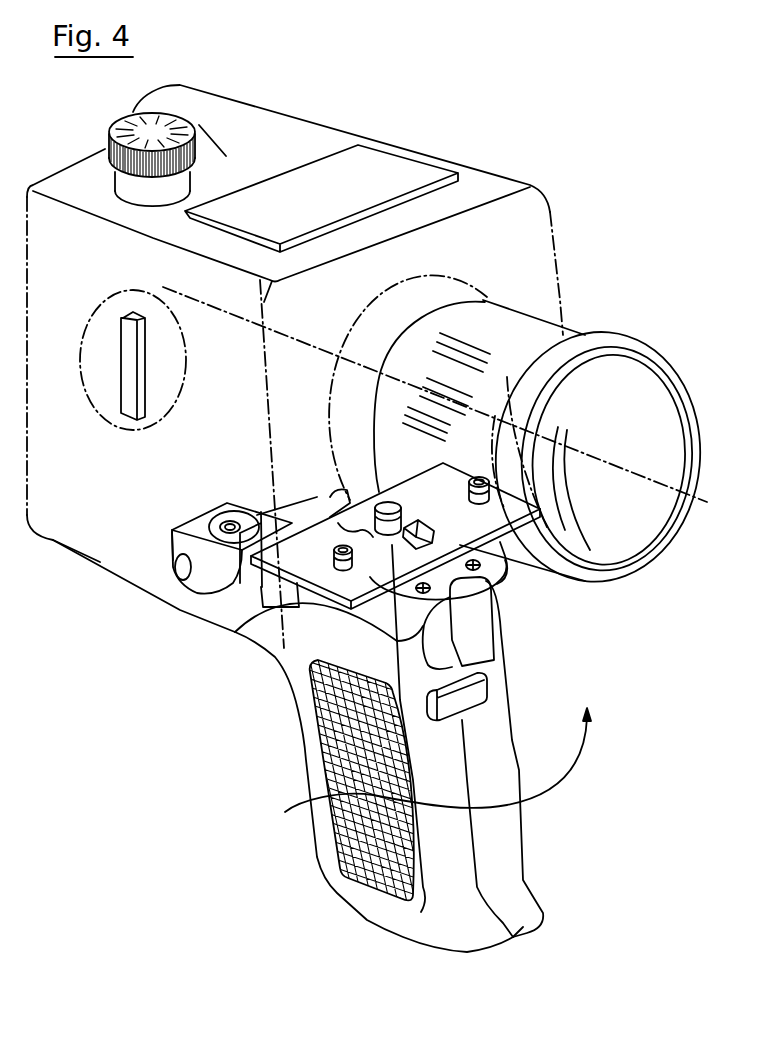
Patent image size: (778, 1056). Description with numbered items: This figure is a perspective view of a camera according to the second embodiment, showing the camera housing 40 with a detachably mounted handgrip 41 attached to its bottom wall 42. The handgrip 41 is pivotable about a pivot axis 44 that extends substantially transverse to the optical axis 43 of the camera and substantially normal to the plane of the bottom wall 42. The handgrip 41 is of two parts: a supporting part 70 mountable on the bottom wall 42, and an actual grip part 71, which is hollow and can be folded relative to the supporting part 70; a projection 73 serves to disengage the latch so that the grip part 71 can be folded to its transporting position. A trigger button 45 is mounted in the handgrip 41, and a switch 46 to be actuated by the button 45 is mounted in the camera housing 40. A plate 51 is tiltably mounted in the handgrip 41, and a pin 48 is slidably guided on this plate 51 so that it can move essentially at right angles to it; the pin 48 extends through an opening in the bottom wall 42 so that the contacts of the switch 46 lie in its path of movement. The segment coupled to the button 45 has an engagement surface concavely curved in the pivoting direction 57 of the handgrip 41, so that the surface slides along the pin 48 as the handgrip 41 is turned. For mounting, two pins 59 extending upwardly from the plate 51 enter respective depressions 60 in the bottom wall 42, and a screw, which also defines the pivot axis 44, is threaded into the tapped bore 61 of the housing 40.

The camera housing 40 is at (497, 180).
The handgrip 41 is at (268, 662).
The bottom wall 42 is at (97, 563).
The optical axis 43 is at (658, 480).
The pivot axis 44 is at (415, 648).
The trigger button 45 is at (478, 640).
The switch 46 is at (502, 570).
The pin 48 is at (455, 575).
The plate 51 is at (293, 577).
The pivoting direction 57 is at (577, 760).
The pins 59 is at (469, 490).
The depressions 60 is at (470, 477).
The tapped bore 61 is at (345, 490).
The supporting part 70 is at (177, 530).
The grip part 71 is at (317, 802).
The projection 73 is at (483, 695).